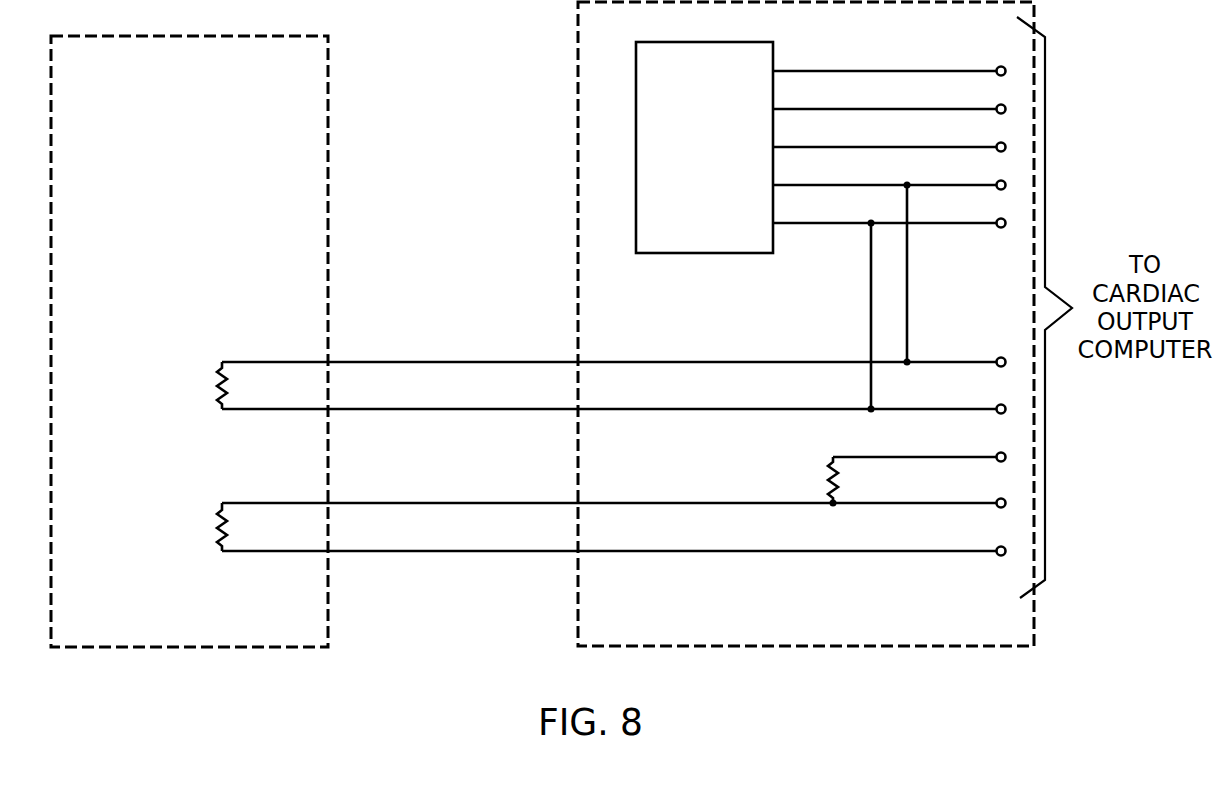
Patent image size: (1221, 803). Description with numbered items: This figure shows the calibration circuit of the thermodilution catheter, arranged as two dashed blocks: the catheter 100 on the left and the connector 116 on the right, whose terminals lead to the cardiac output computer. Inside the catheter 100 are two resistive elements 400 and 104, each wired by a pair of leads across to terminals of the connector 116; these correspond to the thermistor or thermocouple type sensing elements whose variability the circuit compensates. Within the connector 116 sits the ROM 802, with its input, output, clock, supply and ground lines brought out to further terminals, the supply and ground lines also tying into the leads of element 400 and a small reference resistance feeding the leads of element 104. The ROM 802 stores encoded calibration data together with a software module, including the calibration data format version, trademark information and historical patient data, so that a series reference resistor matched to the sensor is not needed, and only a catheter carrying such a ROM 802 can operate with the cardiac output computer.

The catheter 100 is at (189, 341).
The thermistor 104 is at (218, 513).
The connector 116 is at (628, 324).
The heating element 400 is at (217, 373).
The ROM 802 is at (728, 240).